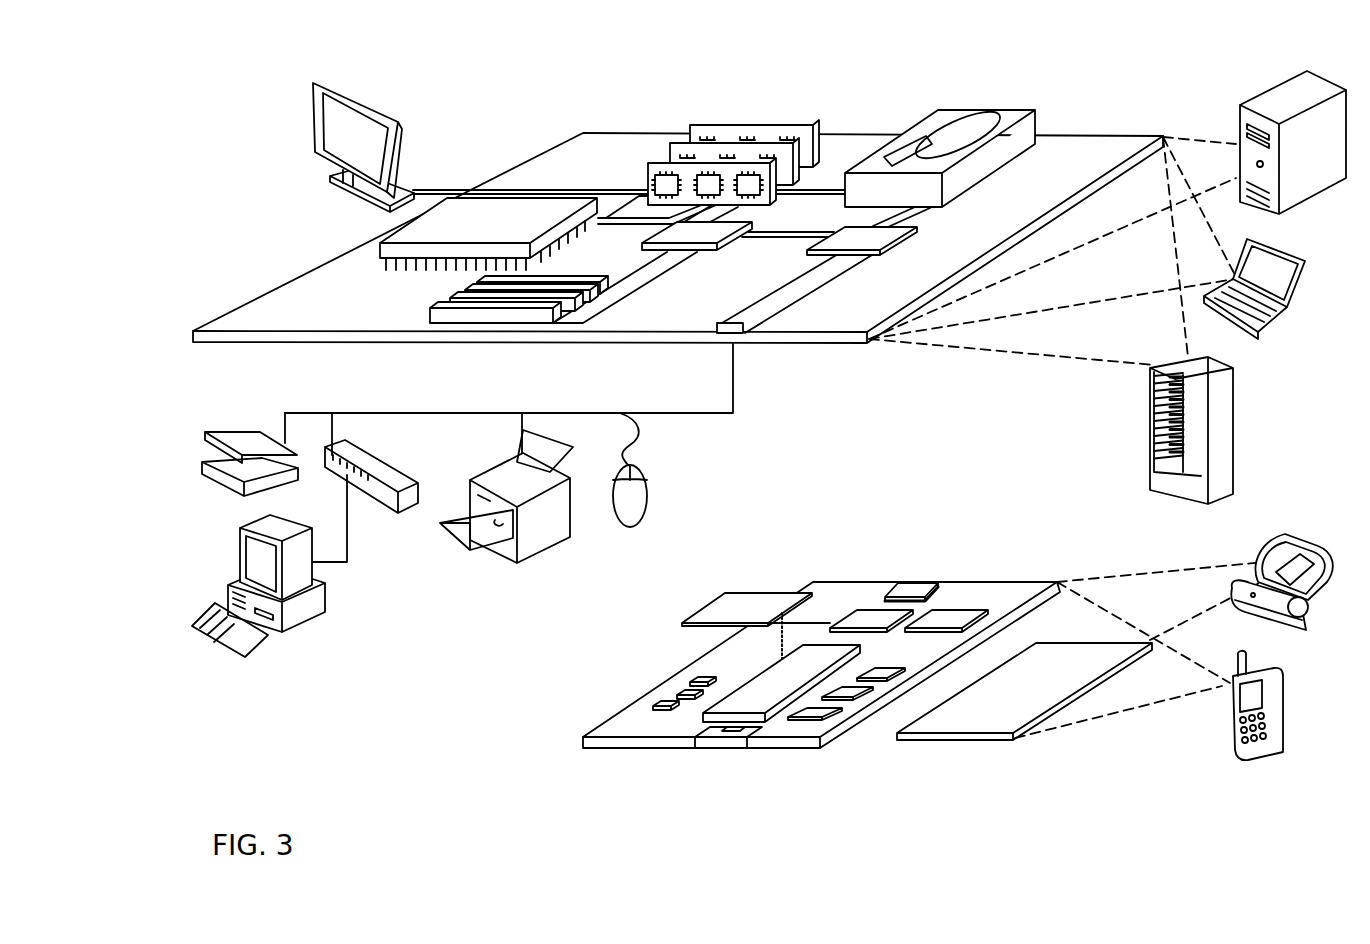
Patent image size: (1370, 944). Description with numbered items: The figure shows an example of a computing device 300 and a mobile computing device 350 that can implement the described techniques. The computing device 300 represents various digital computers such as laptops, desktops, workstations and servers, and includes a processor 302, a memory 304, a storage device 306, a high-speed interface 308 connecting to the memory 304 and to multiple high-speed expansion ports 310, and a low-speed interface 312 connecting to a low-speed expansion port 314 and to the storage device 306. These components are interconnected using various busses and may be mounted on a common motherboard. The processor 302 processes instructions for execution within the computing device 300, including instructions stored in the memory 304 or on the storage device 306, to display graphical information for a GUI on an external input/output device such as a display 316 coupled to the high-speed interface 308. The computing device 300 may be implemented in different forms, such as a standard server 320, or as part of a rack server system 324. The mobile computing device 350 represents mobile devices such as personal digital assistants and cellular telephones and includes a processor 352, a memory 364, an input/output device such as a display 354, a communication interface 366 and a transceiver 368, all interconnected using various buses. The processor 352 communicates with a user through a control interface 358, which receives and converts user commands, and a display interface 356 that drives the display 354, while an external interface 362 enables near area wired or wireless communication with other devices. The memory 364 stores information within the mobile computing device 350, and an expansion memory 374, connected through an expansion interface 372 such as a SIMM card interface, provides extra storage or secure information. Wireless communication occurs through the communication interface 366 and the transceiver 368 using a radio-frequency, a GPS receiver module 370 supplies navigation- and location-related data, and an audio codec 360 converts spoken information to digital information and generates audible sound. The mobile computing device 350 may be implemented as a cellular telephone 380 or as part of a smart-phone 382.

The computing device 300 is at (506, 110).
The processor 302 is at (390, 249).
The memory 304 is at (703, 133).
The storage device 306 is at (925, 116).
The high-speed interface 308 is at (678, 239).
The high-speed expansion ports 310 is at (457, 305).
The low-speed interface 312 is at (849, 236).
The low-speed expansion port 314 is at (745, 338).
The display 316 is at (313, 84).
The standard server 320 is at (1240, 114).
The rack server system 324 is at (1150, 454).
The mobile computing device 350 is at (563, 744).
The processor 352 is at (753, 715).
The display 354 is at (985, 722).
The display interface 356 is at (820, 710).
The control interface 358 is at (853, 690).
The audio codec 360 is at (880, 675).
The external interface 362 is at (720, 740).
The memory 364 is at (686, 696).
The communication interface 366 is at (872, 618).
The transceiver 368 is at (947, 618).
The GPS receiver module 370 is at (923, 582).
The expansion interface 372 is at (800, 590).
The expansion memory 374 is at (734, 593).
The cellular telephone 380 is at (1285, 536).
The smart-phone 382 is at (1230, 707).